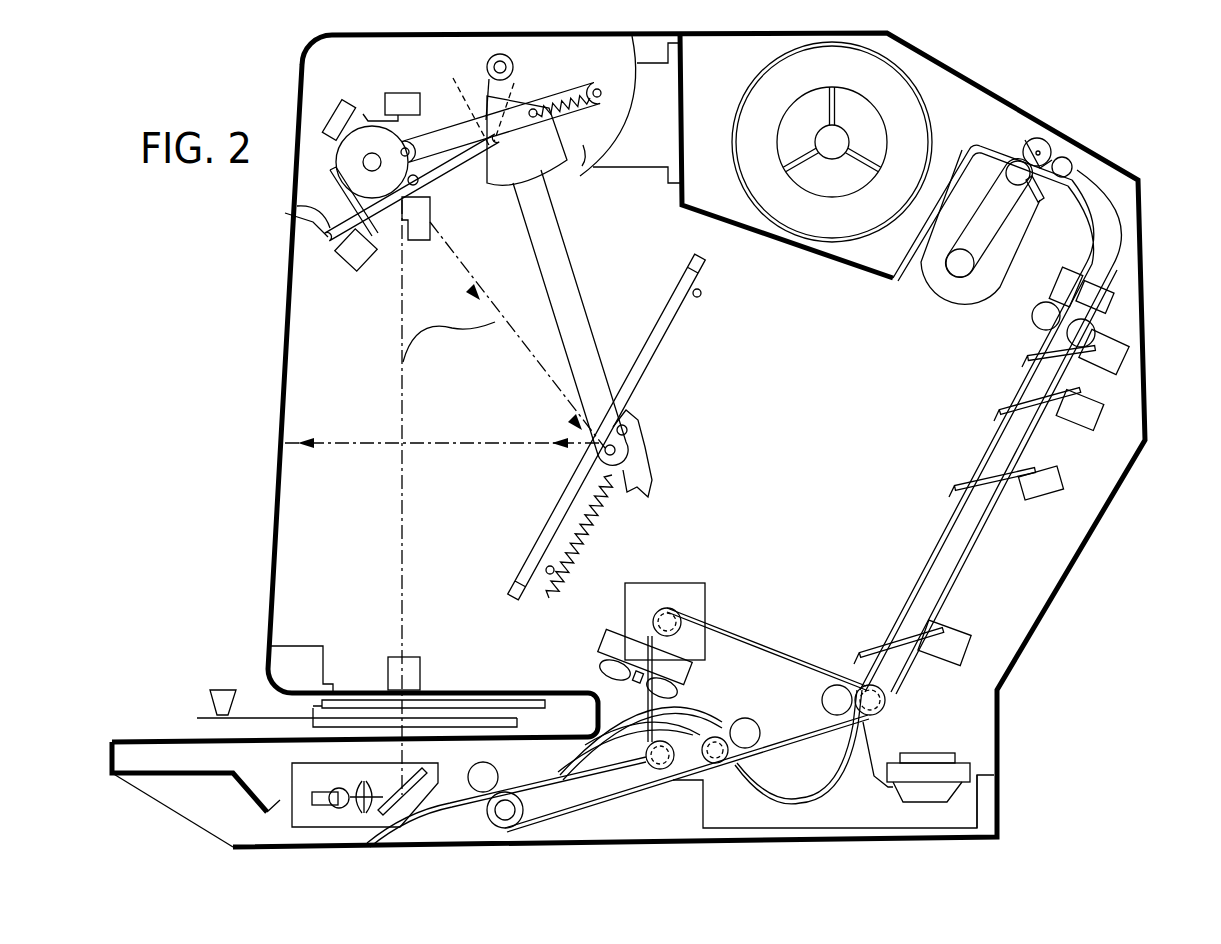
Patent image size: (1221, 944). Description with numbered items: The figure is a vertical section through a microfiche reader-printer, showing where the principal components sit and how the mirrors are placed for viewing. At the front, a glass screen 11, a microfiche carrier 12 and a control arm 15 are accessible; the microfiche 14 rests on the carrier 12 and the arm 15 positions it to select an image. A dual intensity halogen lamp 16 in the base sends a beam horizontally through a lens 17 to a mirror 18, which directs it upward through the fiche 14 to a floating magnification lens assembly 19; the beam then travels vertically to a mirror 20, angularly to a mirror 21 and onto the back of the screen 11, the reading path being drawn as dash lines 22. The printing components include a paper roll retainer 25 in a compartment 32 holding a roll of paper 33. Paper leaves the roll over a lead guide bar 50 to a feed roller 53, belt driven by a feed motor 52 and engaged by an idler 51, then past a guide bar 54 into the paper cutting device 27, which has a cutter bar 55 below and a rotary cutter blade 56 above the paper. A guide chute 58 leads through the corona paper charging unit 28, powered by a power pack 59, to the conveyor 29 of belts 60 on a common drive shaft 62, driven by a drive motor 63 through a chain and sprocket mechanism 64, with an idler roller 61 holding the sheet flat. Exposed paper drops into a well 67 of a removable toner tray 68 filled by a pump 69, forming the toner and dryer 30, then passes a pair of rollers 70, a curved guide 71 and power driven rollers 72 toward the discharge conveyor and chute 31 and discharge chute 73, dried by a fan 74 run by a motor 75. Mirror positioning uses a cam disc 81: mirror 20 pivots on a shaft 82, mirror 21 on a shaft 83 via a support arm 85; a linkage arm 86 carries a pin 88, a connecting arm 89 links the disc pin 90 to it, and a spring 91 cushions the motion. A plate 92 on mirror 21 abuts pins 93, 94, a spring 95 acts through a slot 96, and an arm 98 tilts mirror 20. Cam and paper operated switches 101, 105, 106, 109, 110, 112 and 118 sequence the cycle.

The glass screen 11 is at (275, 490).
The microfiche carrier 12 is at (318, 725).
The microfiche 14 is at (297, 712).
The control arm 15 is at (226, 690).
The dual intensity halogen lamp 16 is at (326, 795).
The lens 17 is at (358, 790).
The mirror 18 is at (402, 790).
The floating magnification lens assembly 19 is at (415, 685).
The mirror 20 is at (452, 178).
The mirror 21 is at (553, 497).
The dash lines 22 is at (449, 349).
The paper roll retainer 25 is at (733, 141).
The paper cutting device 27 is at (1080, 160).
The corona paper charging unit 28 is at (1112, 303).
The conveyor 29 is at (996, 441).
The sensitized paper toner and dryer 30 is at (825, 846).
The paper discharge conveyor and chute 31 is at (722, 720).
The compartment 32 is at (735, 55).
The roll of paper 33 is at (873, 75).
The lead guide bar 50 is at (978, 142).
The idler 51 is at (1006, 175).
The feed motor 52 is at (950, 285).
The feed roller 53 is at (1040, 138).
The guide bar 54 is at (1066, 156).
The cutter bar 55 is at (1040, 195).
The rotary cutter blade 56 is at (1090, 172).
The guide chute 58 is at (1124, 190).
The power pack 59 is at (648, 157).
The belts 60 is at (948, 540).
The idler roller 61 is at (1042, 317).
The drive shaft 62 is at (888, 705).
The drive motor 63 is at (672, 585).
The chain and sprocket mechanism 64 is at (722, 625).
The well 67 is at (808, 769).
The removable toner tray 68 is at (992, 793).
The pump 69 is at (958, 763).
The pair of rollers 70 is at (752, 730).
The curved guide 71 is at (683, 710).
The power driven rollers 72 is at (518, 822).
The discharge chute 73 is at (205, 810).
The fan 74 is at (600, 670).
The motor 75 is at (603, 640).
The cam disc 81 is at (348, 160).
The shaft 82 is at (421, 190).
The shaft 83 is at (510, 66).
The support arm 85 is at (553, 275).
The linkage arm 86 is at (558, 165).
The pin 88 is at (527, 100).
The connecting arm 89 is at (506, 129).
The pin 90 is at (409, 148).
The spring 91 is at (560, 122).
The plate 92 is at (680, 338).
The pin 93 is at (701, 294).
The pin 94 is at (545, 570).
The spring 95 is at (597, 528).
The slot 96 is at (630, 440).
The arm 98 is at (468, 95).
The cam actuated microswitch 101 is at (420, 250).
The feed motor switch 105 is at (343, 262).
The microswitch 106 is at (1115, 362).
The switch 109 is at (1083, 415).
The switch 110 is at (1040, 492).
The microswitch 112 is at (955, 655).
The cam control microswitch 118 is at (402, 88).